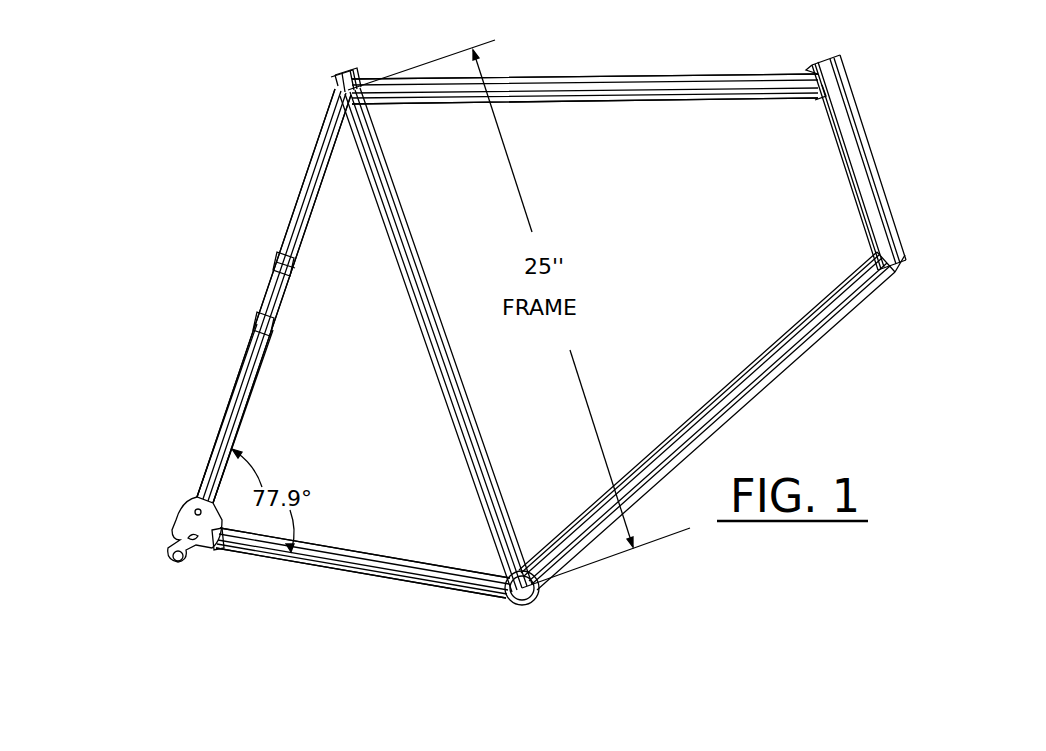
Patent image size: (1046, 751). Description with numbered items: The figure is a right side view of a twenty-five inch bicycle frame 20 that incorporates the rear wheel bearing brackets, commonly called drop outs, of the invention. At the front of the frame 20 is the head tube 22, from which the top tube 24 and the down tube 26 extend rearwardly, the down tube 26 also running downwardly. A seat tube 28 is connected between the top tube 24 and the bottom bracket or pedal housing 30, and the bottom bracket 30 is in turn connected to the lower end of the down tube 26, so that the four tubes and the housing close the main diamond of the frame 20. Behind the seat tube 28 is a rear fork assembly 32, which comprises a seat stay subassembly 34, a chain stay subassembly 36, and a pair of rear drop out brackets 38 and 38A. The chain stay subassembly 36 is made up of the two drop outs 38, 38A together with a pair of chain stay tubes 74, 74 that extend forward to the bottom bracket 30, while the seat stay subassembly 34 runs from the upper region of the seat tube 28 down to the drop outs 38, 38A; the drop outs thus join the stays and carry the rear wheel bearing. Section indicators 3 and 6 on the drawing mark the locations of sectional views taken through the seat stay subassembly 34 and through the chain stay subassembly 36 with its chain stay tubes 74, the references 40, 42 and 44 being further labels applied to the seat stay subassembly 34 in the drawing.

The section line 3- 3 is at (355, 54).
The section line 6- 6 is at (130, 633).
The frame 20 is at (580, 72).
The head tube 22 is at (858, 150).
The top tube 24 is at (588, 85).
The down tube 26 is at (780, 330).
The seat tube 28 is at (410, 270).
The bottom bracket or pedal housing 30 is at (537, 595).
The rear fork assembly 32 is at (258, 278).
The seat stay subassembly 34 is at (302, 195).
The chain stay subassembly 36 is at (392, 597).
The rear drop out bracket 38 is at (172, 528).
The rear drop out bracket 38A is at (215, 545).
The seat stay lower portion 40 is at (240, 383).
The coupling sleeve 42 is at (270, 289).
The seat stay junction 44 is at (305, 265).
The chain stay tube 74 is at (412, 563).